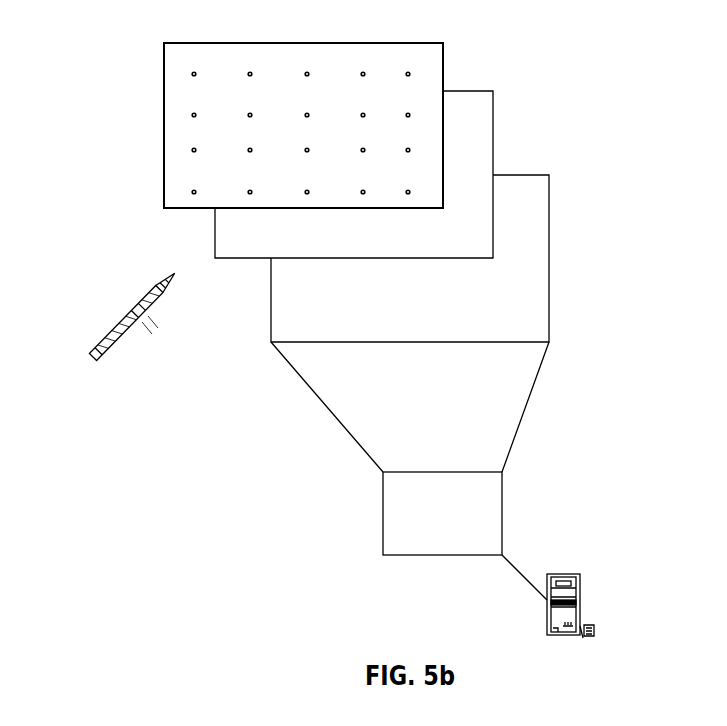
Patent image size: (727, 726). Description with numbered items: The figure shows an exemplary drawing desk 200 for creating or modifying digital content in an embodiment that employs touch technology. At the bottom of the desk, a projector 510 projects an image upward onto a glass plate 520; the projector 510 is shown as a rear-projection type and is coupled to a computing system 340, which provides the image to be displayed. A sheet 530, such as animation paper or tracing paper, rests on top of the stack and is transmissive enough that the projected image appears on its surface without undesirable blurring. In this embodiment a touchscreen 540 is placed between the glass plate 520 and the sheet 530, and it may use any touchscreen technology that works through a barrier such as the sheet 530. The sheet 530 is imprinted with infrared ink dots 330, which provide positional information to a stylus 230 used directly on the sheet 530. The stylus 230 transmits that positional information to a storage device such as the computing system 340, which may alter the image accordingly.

The drawing desk 200 is at (117, 69).
The stylus 230 is at (118, 347).
The infrared ink dots 330 is at (196, 74).
The sheet 530 is at (443, 64).
The touchscreen 540 is at (493, 133).
The glass plate 520 is at (549, 203).
The projector 510 is at (502, 513).
The computing system 340 is at (557, 573).